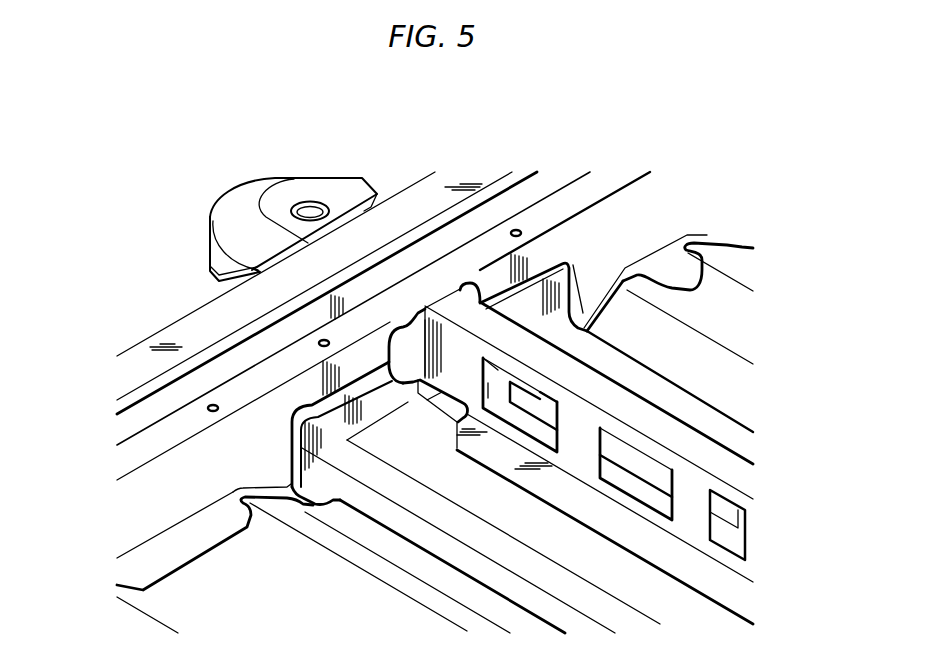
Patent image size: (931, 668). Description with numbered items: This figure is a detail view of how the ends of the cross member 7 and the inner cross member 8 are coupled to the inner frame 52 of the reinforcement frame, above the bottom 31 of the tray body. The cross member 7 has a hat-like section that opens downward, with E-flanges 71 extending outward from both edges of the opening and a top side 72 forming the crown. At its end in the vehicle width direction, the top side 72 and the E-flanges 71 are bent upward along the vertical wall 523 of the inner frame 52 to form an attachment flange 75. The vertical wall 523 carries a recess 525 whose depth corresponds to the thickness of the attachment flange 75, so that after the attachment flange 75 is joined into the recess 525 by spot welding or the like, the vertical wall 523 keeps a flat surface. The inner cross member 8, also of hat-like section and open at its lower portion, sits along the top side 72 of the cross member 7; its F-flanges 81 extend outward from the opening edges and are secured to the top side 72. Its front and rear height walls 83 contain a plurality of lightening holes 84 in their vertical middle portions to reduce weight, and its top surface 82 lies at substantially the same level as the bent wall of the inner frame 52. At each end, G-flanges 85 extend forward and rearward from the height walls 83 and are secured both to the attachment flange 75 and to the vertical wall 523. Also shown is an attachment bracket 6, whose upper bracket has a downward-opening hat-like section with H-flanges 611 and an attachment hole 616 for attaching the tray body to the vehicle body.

The attachment bracket 6 is at (238, 186).
The attachment hole 616 is at (306, 204).
The H-flange 611 is at (210, 247).
The inner frame 52 is at (190, 420).
The recess 525 is at (297, 450).
The vertical wall 523 is at (157, 512).
The bottom 31 is at (172, 600).
The cross member 7 is at (333, 521).
The E-flange 71 is at (385, 510).
The top side 72 is at (457, 495).
The attachment flange 75 is at (303, 410).
The inner cross member 8 is at (600, 358).
The F-flange 81 is at (673, 550).
The top surface 82 is at (720, 461).
The height wall 83 is at (577, 447).
The lightening hole 84 is at (628, 446).
The G-flange 85 is at (401, 342).